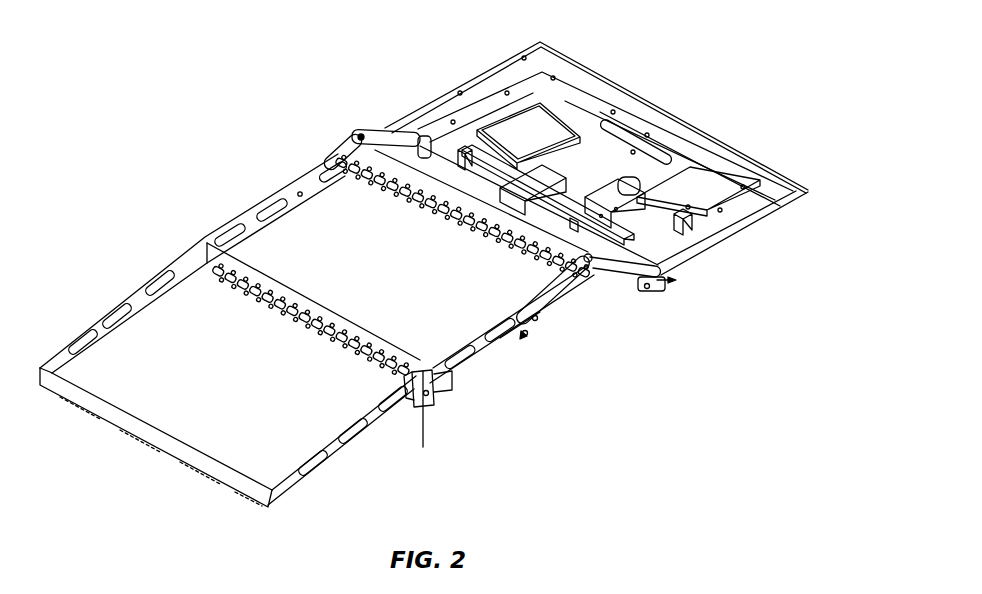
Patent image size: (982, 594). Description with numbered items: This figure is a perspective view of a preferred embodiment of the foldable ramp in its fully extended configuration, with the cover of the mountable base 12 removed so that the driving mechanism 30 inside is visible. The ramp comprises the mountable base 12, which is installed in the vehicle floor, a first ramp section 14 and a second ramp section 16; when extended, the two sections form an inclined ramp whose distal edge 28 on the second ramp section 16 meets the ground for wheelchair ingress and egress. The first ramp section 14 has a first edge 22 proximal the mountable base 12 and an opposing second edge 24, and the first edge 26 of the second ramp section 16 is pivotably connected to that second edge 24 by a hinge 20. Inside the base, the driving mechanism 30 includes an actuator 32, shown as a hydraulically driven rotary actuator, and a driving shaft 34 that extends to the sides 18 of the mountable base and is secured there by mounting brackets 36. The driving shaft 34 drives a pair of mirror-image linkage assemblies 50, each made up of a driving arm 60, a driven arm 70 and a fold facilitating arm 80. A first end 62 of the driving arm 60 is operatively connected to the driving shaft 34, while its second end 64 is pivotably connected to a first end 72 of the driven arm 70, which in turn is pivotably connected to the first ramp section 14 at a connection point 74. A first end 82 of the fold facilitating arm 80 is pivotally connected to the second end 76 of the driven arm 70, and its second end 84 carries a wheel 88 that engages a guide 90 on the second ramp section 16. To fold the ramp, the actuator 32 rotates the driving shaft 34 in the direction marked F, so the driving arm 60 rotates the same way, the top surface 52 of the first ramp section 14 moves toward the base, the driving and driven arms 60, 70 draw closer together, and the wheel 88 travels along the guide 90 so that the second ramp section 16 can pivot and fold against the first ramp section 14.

The mountable base 12 is at (735, 279).
The first ramp section 14 is at (443, 330).
The second ramp section 16 is at (330, 425).
The sides of the mountable base 18 is at (427, 120).
The hinge 20 is at (220, 262).
The first edge of the first ramp section 22 is at (487, 215).
The second edge of the first ramp section 24 is at (445, 387).
The first edge of the second ramp section 26 is at (202, 262).
The distal edge 28 is at (163, 443).
The driving mechanism 30 is at (465, 72).
The actuator 32 is at (530, 197).
The driving shaft 34 is at (466, 162).
The mounting brackets 36 is at (352, 133).
The linkage assembly 50 is at (337, 93).
The top surface of the first ramp section 52 is at (303, 240).
The driving arm 60 is at (650, 282).
The first end of the driving arm 62 is at (660, 268).
The second end of the driving arm 64 is at (567, 258).
The driven arm 70 is at (340, 157).
The first end of the driven arm 72 is at (573, 293).
The connection point 74 is at (537, 320).
The second end of the driven arm 76 is at (528, 335).
The fold facilitating arm 80 is at (517, 345).
The first end of the fold facilitating link 82 is at (518, 328).
The second end of the fold facilitating link 84 is at (423, 447).
The wheel 88 is at (433, 400).
The guide 90 is at (410, 380).